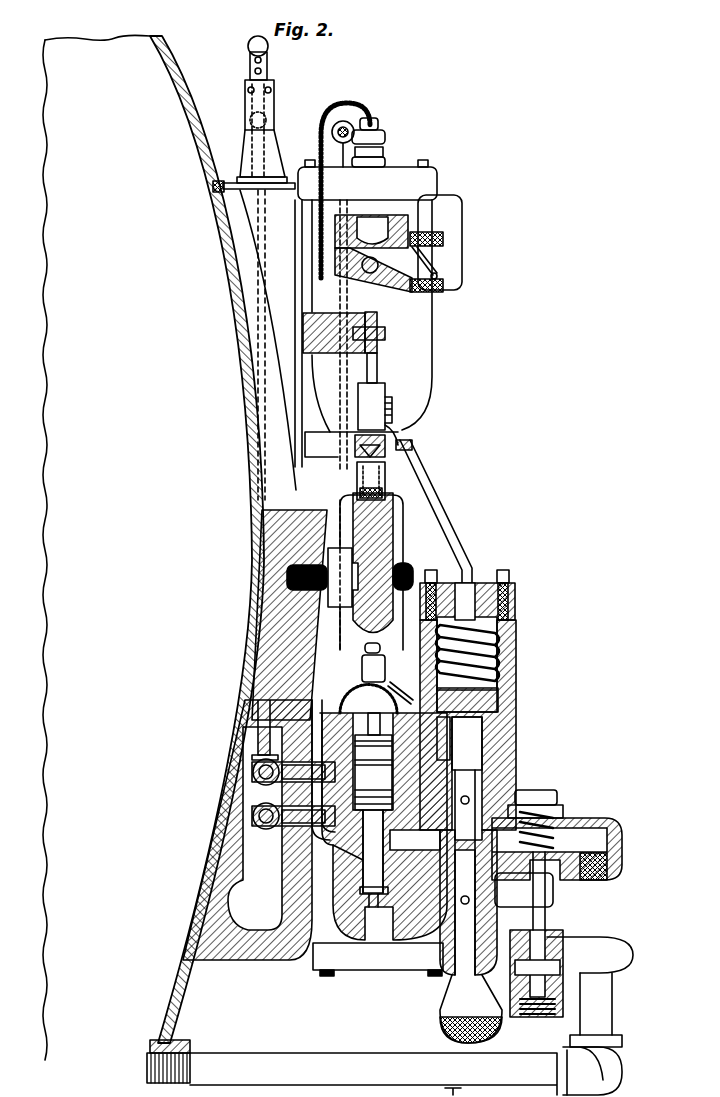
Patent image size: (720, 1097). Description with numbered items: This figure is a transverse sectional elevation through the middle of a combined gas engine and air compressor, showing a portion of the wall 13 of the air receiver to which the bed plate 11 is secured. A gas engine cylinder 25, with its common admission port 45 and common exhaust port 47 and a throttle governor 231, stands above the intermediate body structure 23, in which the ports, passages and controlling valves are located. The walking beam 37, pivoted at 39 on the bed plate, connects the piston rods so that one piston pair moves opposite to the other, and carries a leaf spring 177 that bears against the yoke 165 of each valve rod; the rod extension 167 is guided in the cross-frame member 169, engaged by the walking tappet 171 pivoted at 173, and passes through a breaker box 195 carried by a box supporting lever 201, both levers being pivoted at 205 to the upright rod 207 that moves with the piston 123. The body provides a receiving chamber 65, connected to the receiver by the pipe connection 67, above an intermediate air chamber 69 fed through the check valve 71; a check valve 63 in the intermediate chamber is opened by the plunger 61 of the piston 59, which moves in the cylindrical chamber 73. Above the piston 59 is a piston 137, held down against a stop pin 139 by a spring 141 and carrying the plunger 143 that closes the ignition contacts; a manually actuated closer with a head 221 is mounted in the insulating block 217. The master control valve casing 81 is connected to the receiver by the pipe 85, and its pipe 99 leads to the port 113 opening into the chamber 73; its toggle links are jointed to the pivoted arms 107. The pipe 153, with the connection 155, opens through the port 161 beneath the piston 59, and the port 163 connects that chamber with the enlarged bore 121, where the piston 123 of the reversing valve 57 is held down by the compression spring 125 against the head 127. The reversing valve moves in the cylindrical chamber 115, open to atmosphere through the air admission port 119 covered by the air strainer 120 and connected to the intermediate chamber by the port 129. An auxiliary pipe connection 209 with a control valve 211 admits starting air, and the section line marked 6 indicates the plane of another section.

The bed plate 11 is at (280, 548).
The wall of the air receiver 13 is at (226, 812).
The intermediate body structure 23 is at (516, 740).
The gas engine cylinder 25 is at (432, 382).
The walking beam 37 is at (393, 543).
The pivot of the walking beam 39 is at (413, 563).
The common admission port 45 is at (412, 292).
The common exhaust port 47 is at (373, 216).
The piston reversing valve 57 is at (475, 792).
The piston 59 is at (330, 832).
The plunger 61 is at (345, 868).
The check valve 63 is at (390, 886).
The receiving chamber 65 is at (582, 820).
The pipe connection 67 is at (614, 990).
The intermediate air chamber 69 is at (570, 932).
The check valve 71 is at (607, 893).
The cylindrical chamber 73 is at (256, 785).
The casing of the master control valve 81 is at (272, 108).
The pipe 85 is at (228, 180).
The pipe 99 is at (262, 208).
The pivoted arms 107 is at (268, 78).
The port 113 is at (335, 742).
The cylindrical chamber 115 is at (495, 890).
The air admission port 119 is at (442, 996).
The air strainer 120 is at (440, 1028).
The enlarged bore 121 is at (495, 668).
The piston 123 is at (500, 700).
The compression spring 125 is at (490, 650).
The head of the cylindrical bore 127 is at (480, 583).
The port 129 is at (478, 876).
The piston 137 is at (440, 748).
The stop pin 139 is at (446, 770).
The spring 141 is at (300, 722).
The plunger 143 is at (340, 696).
The pipe 153 is at (350, 123).
The connection 155 is at (386, 150).
The port 161 is at (335, 858).
The port 163 is at (388, 828).
The yoke or bifurcated portion 165 is at (404, 506).
The rod extension 167 is at (378, 360).
The cross-frame member 169 is at (403, 437).
The equalizing lever or walking tappet 171 is at (378, 316).
The pivot of the walking tappet 173 is at (386, 333).
The leaf spring 177 is at (385, 490).
The breaker box 195 is at (378, 396).
The box supporting lever 201 is at (402, 426).
The pivot connection 205 is at (413, 445).
The upright rod 207 is at (470, 562).
The pipe connection 209 is at (520, 1020).
The control valve 211 is at (568, 952).
The block 217 is at (345, 650).
The head 221 is at (320, 625).
The throttle governor 231 is at (455, 245).
The section line 6 is at (586, 786).